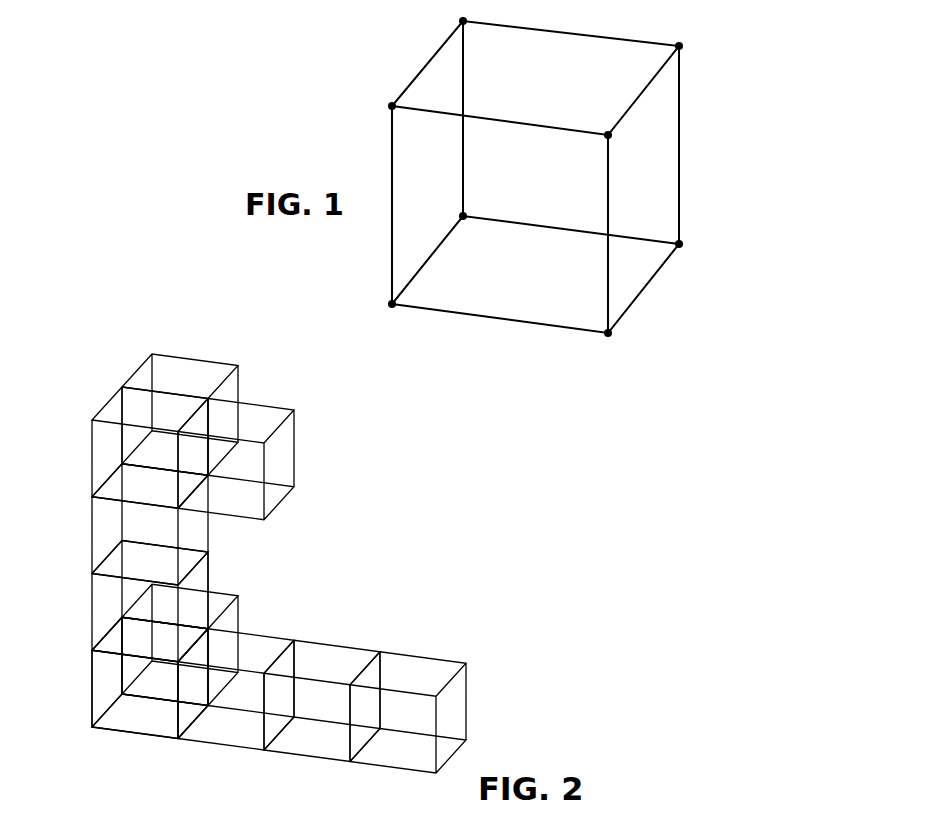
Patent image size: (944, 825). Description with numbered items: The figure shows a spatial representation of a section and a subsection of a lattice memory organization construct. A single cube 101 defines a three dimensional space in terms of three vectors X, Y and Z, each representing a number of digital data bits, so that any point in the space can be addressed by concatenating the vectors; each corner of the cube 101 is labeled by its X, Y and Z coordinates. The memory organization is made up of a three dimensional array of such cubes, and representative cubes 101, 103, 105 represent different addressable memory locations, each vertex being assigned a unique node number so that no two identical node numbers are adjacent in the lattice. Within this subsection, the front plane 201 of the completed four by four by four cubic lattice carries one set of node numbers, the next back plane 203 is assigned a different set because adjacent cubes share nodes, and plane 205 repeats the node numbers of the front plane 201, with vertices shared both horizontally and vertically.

In FIG. 1, the cube 101 is at (588, 33).
In FIG. 2, the cube 101 is at (118, 735).
In FIG. 2, the cube 103 is at (242, 617).
In FIG. 2, the cube 105 is at (217, 575).
In FIG. 2, the front plane 201 is at (82, 418).
In FIG. 2, the next back plane 203 is at (294, 410).
In FIG. 2, the plane 205 is at (585, 407).